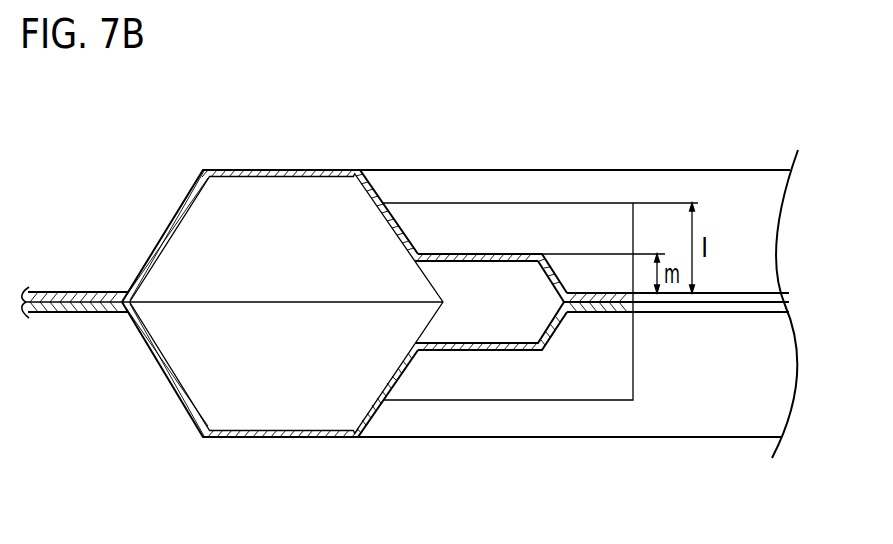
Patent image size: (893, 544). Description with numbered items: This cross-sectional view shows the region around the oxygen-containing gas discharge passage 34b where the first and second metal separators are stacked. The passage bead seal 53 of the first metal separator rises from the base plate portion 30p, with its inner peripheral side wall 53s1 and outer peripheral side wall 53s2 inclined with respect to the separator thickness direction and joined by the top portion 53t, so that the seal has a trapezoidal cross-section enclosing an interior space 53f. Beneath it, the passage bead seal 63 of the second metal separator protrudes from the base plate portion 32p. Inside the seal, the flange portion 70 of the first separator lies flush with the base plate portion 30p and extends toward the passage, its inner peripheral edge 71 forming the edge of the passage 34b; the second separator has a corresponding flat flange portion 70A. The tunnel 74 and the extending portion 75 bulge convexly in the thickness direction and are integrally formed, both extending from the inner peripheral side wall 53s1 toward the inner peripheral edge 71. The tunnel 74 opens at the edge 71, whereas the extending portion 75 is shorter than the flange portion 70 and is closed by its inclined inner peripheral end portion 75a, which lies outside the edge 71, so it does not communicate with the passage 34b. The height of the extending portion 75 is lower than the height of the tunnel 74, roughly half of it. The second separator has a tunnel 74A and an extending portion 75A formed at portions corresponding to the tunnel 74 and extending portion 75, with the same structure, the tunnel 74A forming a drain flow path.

The passage bead seal 53 is at (236, 303).
The top portion 53t is at (284, 167).
The inner peripheral side wall 53s1 is at (382, 196).
The outer peripheral side wall 53s2 is at (183, 194).
The inner space of sensor element 53f is at (292, 262).
The passage bead seal 63 is at (305, 439).
The tunnel 74 is at (526, 203).
The tunnel 74A is at (526, 438).
The oxygen-containing gas discharge passage 34b is at (578, 302).
The extending portion 75 is at (452, 255).
The inner peripheral end portion 75a is at (554, 272).
The extending portion 75A is at (458, 352).
The flange portion 70 is at (592, 291).
The flange portion 70A is at (593, 313).
The inner peripheral edge 71 is at (636, 308).
The base plate portion 30p is at (44, 292).
The base plate portion 32p is at (44, 312).